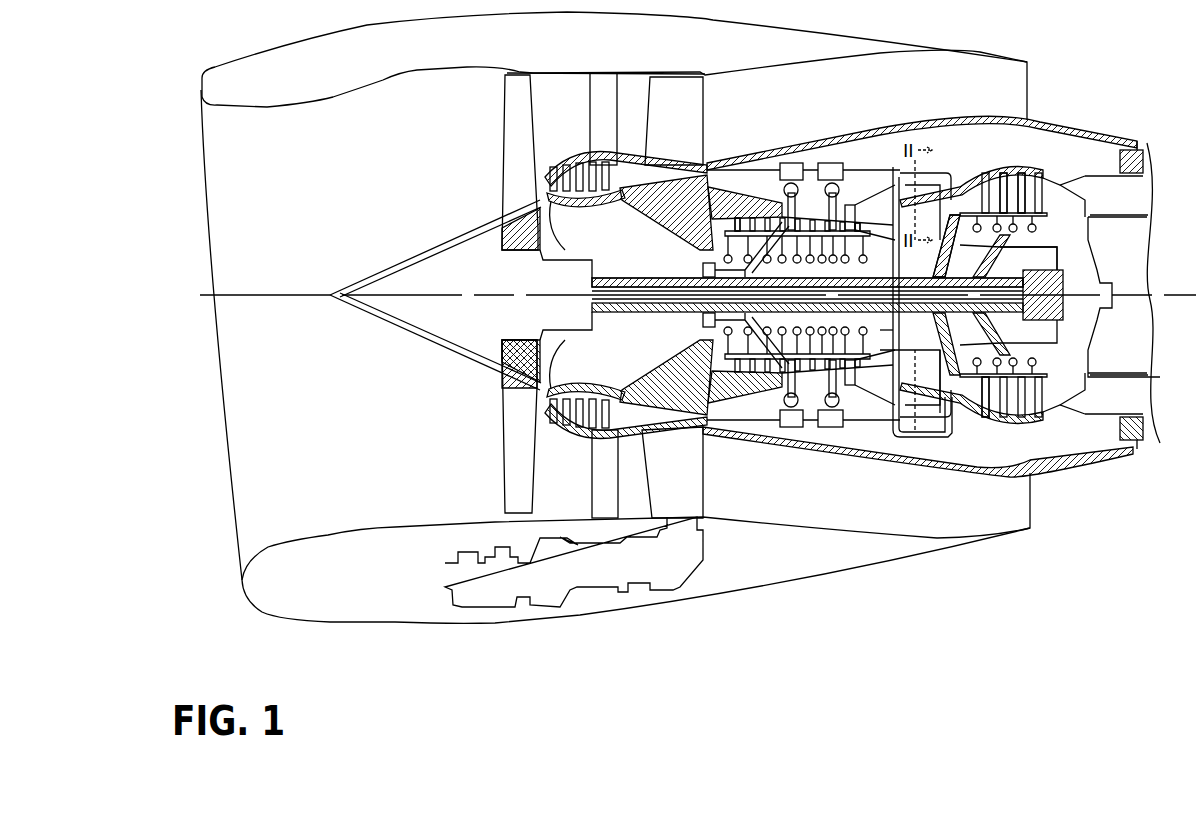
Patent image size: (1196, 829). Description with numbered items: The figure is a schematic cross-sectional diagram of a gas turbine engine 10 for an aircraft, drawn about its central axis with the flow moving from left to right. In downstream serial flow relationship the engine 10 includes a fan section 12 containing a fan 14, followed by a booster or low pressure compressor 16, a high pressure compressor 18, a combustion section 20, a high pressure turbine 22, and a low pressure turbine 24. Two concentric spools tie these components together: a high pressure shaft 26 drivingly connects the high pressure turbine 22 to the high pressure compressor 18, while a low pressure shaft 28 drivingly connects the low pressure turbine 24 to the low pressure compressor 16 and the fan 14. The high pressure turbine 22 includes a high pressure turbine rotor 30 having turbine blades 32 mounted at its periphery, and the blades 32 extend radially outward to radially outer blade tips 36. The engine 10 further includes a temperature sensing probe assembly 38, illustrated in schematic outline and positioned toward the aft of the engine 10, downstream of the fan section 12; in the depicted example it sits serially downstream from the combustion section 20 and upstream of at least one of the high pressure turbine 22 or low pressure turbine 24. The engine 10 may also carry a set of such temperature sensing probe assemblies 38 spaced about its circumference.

The gas turbine engine 10 is at (482, 418).
The fan section 12 is at (531, 60).
The fan 14 is at (512, 130).
The low pressure compressor 16 is at (569, 132).
The high pressure compressor 18 is at (770, 215).
The combustion section 20 is at (887, 372).
The high pressure turbine 22 is at (957, 407).
The low pressure turbine 24 is at (1010, 185).
The high pressure shaft 26 is at (890, 338).
The low pressure shaft 28 is at (635, 312).
The high pressure turbine rotor 30 is at (1010, 240).
The turbine blades 32 is at (1007, 207).
The radially outer blade tips 36 is at (950, 182).
The temperature sensing probe assembly 38 is at (872, 165).